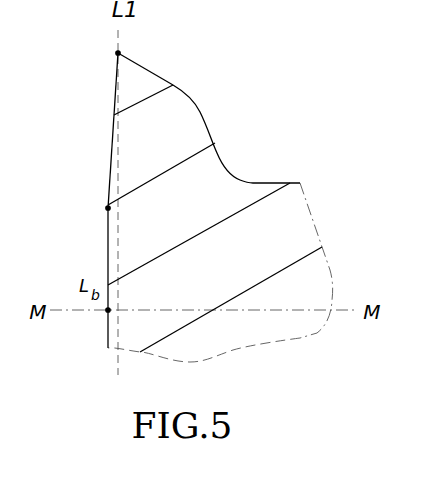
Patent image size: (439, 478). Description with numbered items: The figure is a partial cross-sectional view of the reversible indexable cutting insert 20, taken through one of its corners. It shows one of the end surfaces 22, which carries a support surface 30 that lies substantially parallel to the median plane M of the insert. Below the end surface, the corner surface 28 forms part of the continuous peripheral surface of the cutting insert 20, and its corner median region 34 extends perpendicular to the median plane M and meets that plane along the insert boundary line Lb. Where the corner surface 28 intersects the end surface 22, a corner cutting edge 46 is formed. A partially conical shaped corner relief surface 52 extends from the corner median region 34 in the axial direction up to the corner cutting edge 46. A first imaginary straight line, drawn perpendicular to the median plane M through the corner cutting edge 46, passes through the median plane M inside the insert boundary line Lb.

The cutting insert 20 is at (337, 193).
The end surface 22 is at (225, 158).
The corner surface 28 is at (108, 193).
The support surface 30 is at (275, 181).
The corner median region 34 is at (108, 258).
The corner cutting edge 46 is at (127, 63).
The corner relief surface 52 is at (113, 124).